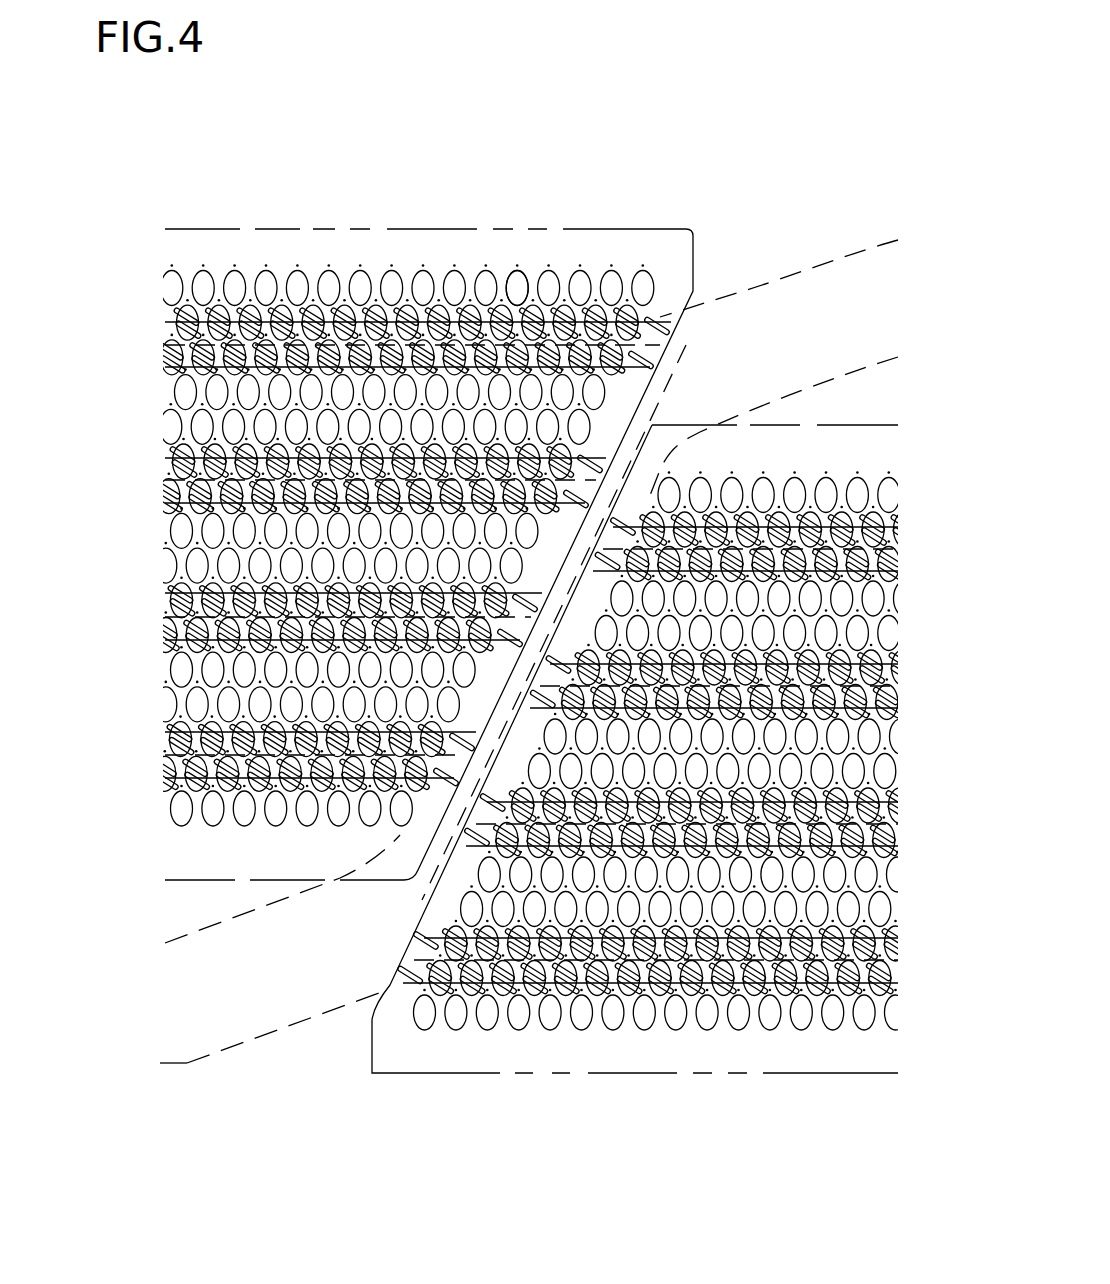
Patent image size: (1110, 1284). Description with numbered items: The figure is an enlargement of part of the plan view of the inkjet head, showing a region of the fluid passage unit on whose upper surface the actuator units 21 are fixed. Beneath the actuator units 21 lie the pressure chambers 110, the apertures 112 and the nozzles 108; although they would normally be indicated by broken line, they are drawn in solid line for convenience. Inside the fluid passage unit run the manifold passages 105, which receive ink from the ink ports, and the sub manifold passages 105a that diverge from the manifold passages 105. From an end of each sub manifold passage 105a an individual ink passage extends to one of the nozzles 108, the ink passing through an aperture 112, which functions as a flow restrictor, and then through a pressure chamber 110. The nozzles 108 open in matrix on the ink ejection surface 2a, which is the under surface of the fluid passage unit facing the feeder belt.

The ink ejection surface 2a is at (812, 146).
The actuator unit 21 is at (663, 229).
The manifold passage 105 is at (781, 291).
The sub manifold passage 105a is at (168, 332).
The nozzle 108 is at (332, 268).
The pressure chamber 110 is at (512, 292).
The aperture 112 is at (365, 312).